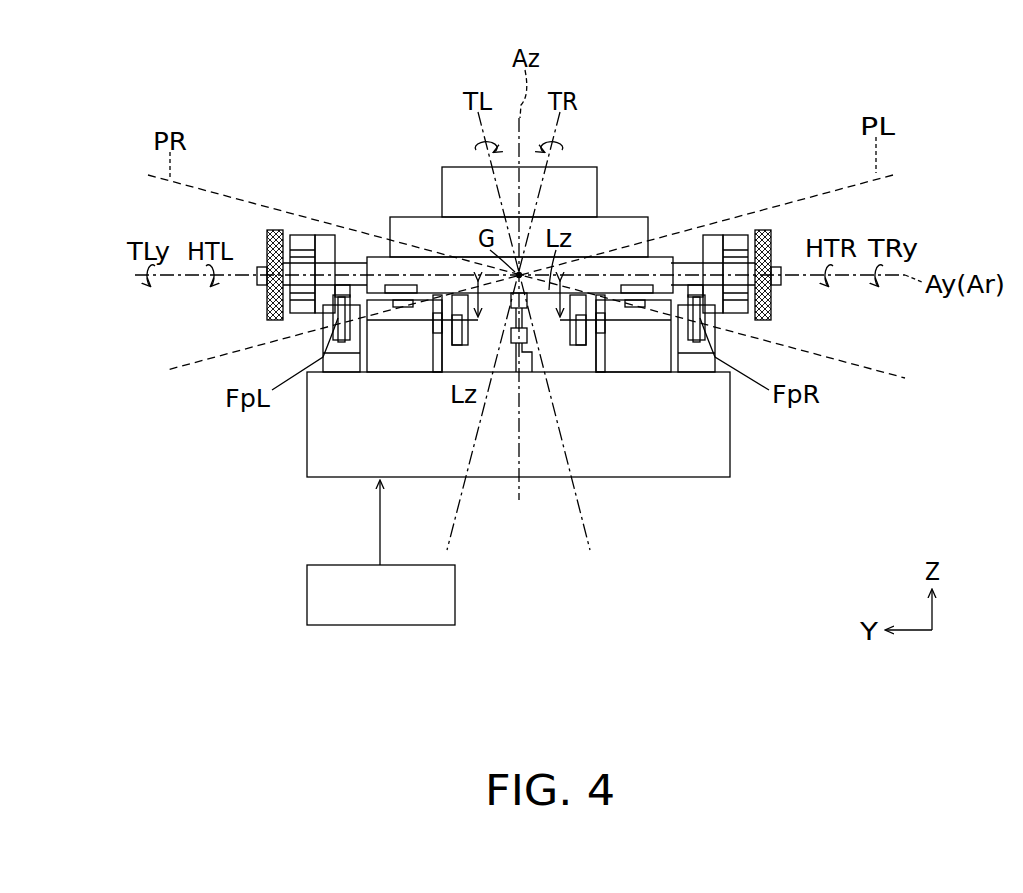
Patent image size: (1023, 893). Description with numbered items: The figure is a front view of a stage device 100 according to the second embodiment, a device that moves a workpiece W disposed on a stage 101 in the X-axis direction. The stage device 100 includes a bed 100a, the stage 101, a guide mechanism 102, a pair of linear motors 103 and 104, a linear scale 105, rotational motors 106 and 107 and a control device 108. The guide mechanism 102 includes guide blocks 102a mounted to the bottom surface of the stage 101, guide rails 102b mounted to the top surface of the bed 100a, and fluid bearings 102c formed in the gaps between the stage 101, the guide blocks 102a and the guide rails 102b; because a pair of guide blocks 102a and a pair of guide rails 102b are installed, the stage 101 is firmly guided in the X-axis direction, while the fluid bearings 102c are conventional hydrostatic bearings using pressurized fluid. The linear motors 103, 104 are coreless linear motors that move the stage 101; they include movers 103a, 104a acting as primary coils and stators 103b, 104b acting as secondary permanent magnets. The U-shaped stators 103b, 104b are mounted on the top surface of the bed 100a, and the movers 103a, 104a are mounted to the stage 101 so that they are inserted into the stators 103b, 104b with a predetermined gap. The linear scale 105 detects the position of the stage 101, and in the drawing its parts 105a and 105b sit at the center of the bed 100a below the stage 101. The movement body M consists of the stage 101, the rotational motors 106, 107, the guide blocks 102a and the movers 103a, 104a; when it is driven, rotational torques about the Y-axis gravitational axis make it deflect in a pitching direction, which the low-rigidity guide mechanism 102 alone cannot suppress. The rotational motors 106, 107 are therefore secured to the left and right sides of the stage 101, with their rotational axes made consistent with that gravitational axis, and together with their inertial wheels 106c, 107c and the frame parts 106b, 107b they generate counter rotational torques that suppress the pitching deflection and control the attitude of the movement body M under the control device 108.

The stage device 100 is at (756, 69).
The bed 100a is at (340, 478).
The stage 101 is at (651, 255).
The guide mechanism 102 is at (213, 413).
The guide blocks 102a is at (478, 302).
The guide rails 102b is at (433, 330).
The fluid bearings 102c is at (392, 303).
The linear motor 103 is at (177, 310).
The mover 103a is at (323, 327).
The stator 103b is at (323, 357).
The linear motor 104 is at (866, 303).
The mover 104a is at (715, 327).
The stator 104b is at (715, 357).
The linear scale 105 is at (690, 496).
The center support upper part 105a is at (530, 306).
The center support lower part 105b is at (522, 373).
The rotational motor 106 is at (300, 235).
The left bearing frame 106b is at (325, 235).
The inertial wheel 106c is at (272, 230).
The rotational motor 107 is at (740, 235).
The right bearing frame 107b is at (714, 235).
The inertial wheel 107c is at (765, 228).
The control device 108 is at (432, 626).
The movement body M is at (389, 126).
The workpiece W is at (597, 175).